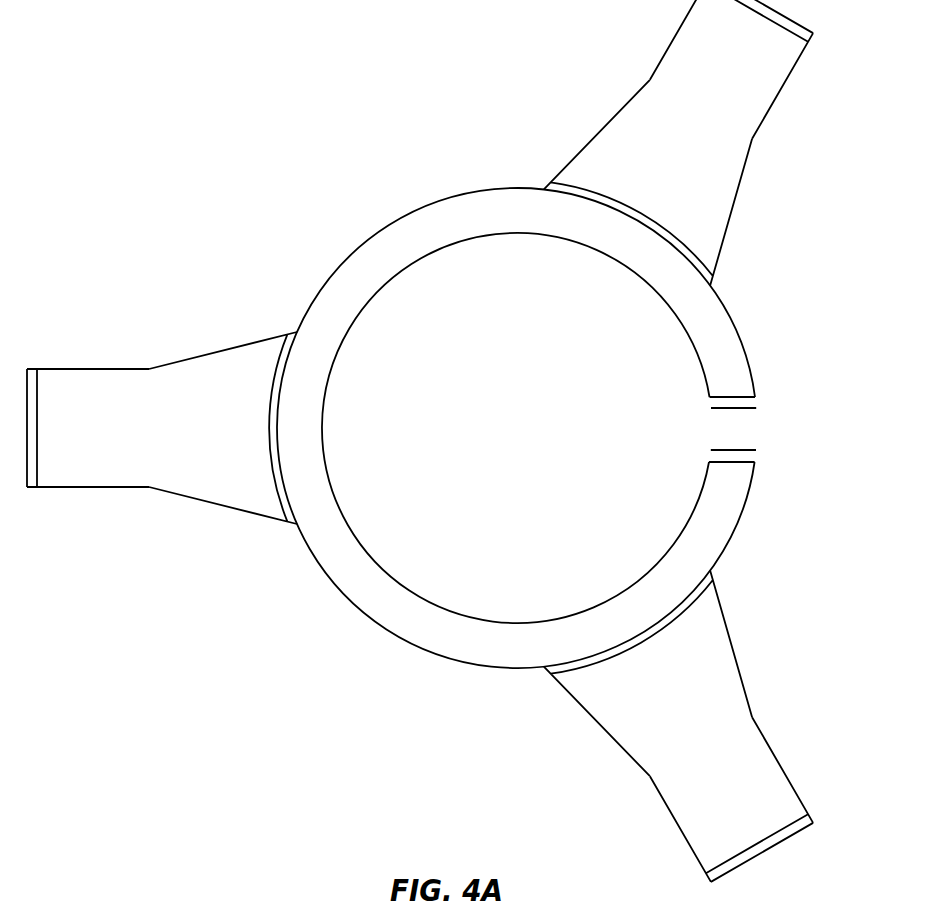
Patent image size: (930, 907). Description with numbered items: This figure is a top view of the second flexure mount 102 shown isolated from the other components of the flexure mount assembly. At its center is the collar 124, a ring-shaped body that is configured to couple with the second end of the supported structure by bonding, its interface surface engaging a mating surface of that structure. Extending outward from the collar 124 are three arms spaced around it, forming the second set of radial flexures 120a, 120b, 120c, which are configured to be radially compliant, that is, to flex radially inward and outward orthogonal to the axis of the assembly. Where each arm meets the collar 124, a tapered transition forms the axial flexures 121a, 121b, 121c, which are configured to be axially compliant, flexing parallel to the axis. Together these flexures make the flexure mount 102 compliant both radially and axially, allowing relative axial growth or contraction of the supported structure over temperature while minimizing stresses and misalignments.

The flexure mount 102 is at (420, 441).
The collar 124 is at (394, 235).
The radial flexure 120a is at (84, 355).
The radial flexure 120b is at (673, 846).
The radial flexure 120c is at (660, 30).
The axial flexure 121a is at (225, 333).
The axial flexure 121b is at (590, 742).
The axial flexure 121c is at (581, 125).